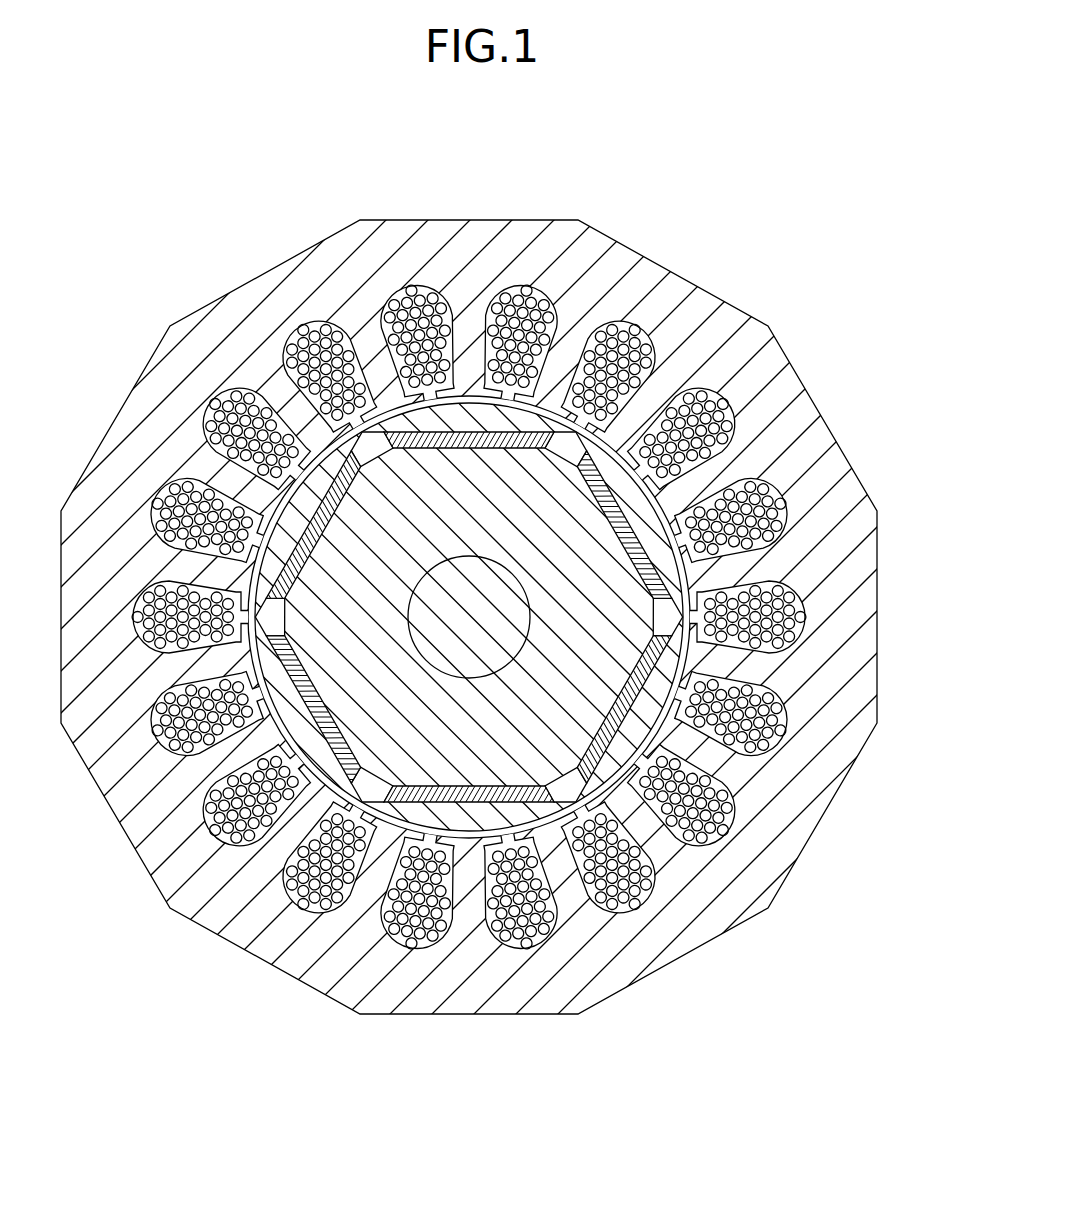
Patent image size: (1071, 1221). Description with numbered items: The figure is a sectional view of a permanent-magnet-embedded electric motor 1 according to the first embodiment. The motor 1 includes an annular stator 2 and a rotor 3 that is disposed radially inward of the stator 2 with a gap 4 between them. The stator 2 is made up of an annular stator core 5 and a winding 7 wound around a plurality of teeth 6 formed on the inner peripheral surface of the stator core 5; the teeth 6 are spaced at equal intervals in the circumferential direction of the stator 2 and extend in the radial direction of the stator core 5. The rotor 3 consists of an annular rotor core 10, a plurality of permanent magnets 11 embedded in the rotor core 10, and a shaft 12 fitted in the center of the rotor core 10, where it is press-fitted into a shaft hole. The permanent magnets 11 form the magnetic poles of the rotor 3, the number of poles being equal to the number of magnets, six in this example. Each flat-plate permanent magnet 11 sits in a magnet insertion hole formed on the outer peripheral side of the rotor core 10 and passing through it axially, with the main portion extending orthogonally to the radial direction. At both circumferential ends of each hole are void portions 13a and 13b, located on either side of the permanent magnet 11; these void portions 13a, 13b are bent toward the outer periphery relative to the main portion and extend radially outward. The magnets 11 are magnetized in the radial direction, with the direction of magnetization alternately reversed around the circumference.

The permanent-magnet-embedded electric motor 1 is at (766, 196).
The stator 2 is at (558, 277).
The rotor 3 is at (594, 593).
The gap 4 is at (283, 730).
The stator core 5 is at (97, 493).
The teeth 6 is at (469, 265).
The winding 7 is at (250, 350).
The rotor core 10 is at (601, 637).
The permanent magnets 11 is at (736, 498).
The shaft 12 is at (497, 650).
The void portion 13a is at (353, 300).
The void portion 13b is at (697, 365).